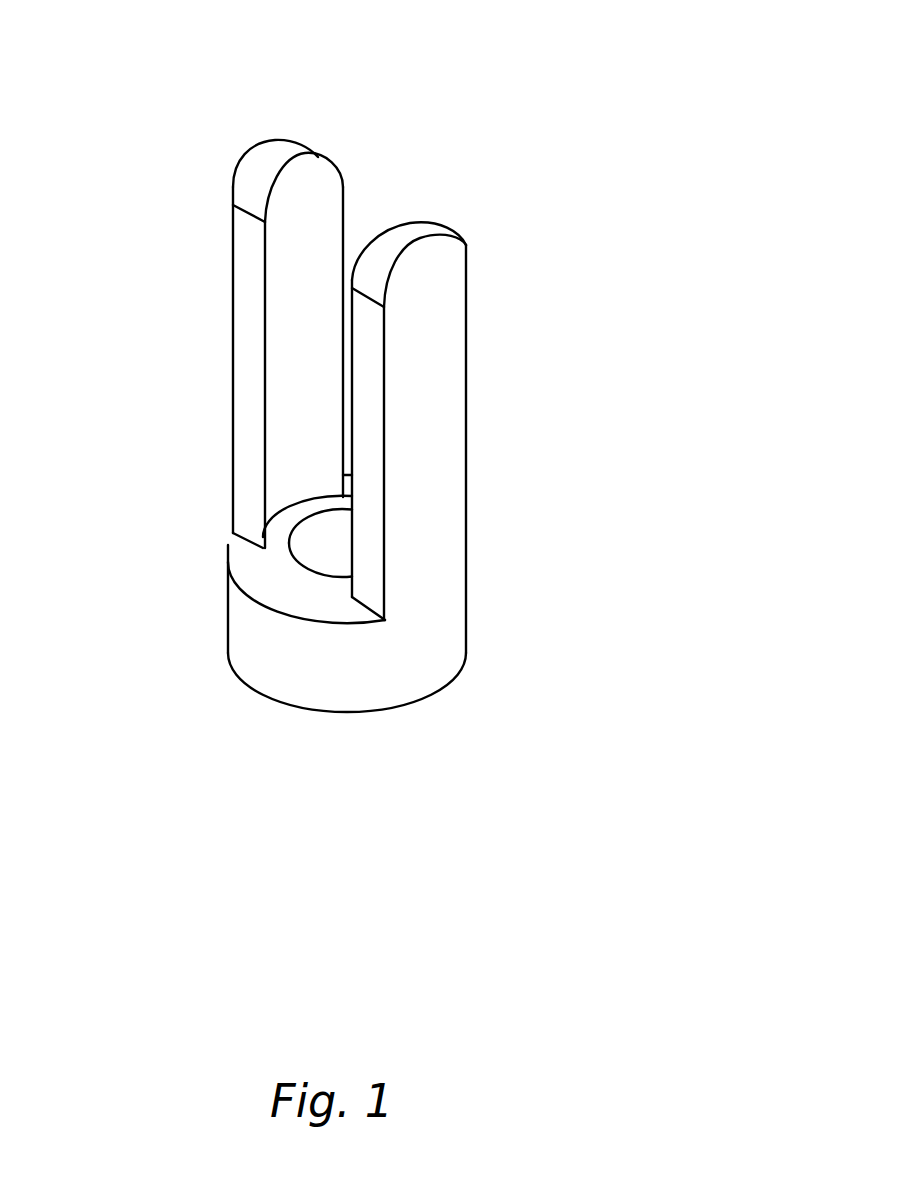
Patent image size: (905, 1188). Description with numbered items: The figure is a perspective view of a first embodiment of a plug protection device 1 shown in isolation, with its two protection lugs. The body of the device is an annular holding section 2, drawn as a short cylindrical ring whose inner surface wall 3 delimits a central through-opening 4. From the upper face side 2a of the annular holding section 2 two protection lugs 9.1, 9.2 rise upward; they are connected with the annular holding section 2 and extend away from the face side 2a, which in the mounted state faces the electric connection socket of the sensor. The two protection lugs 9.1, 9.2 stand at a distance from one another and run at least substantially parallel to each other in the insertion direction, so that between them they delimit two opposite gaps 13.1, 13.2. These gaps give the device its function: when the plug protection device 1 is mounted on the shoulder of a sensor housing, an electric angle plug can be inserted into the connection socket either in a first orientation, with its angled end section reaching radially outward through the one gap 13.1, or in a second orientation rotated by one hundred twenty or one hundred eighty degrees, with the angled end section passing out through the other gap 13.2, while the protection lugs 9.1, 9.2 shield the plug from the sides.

The plug protection device 1 is at (518, 137).
The annular holding section 2 is at (250, 646).
The face side 2a is at (260, 574).
The inner surface wall 3 is at (320, 523).
The through-opening 4 is at (337, 567).
The protection lug 9.1 is at (232, 344).
The protection lug 9.2 is at (475, 399).
The gap 13.1 is at (343, 412).
The gap 13.2 is at (433, 215).